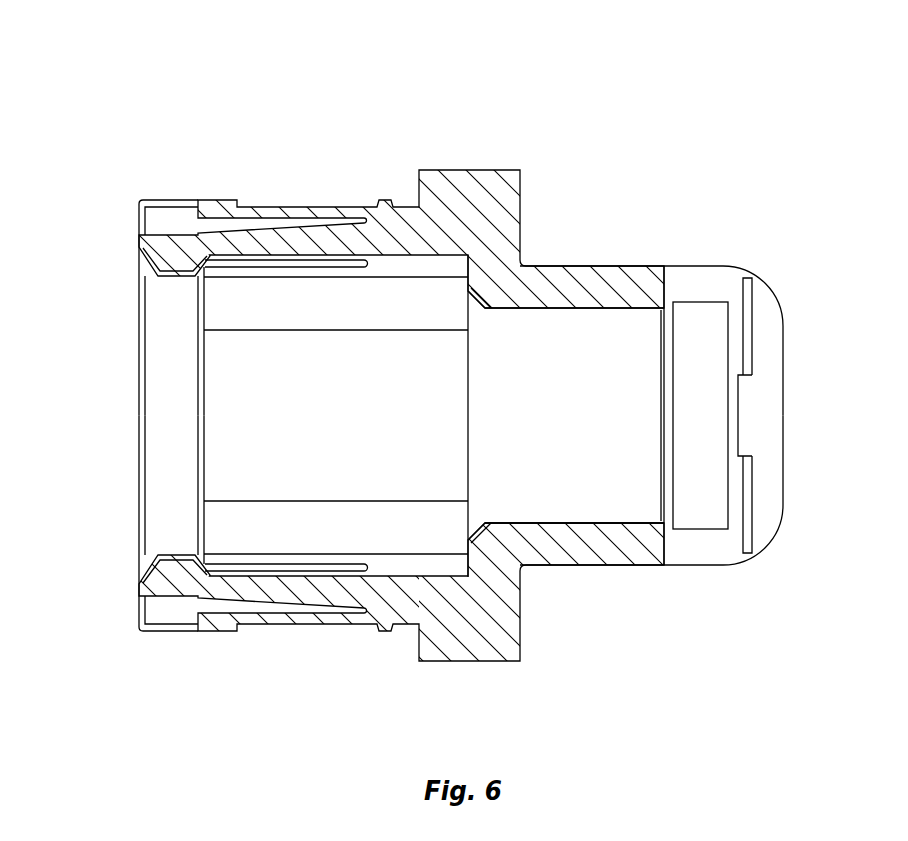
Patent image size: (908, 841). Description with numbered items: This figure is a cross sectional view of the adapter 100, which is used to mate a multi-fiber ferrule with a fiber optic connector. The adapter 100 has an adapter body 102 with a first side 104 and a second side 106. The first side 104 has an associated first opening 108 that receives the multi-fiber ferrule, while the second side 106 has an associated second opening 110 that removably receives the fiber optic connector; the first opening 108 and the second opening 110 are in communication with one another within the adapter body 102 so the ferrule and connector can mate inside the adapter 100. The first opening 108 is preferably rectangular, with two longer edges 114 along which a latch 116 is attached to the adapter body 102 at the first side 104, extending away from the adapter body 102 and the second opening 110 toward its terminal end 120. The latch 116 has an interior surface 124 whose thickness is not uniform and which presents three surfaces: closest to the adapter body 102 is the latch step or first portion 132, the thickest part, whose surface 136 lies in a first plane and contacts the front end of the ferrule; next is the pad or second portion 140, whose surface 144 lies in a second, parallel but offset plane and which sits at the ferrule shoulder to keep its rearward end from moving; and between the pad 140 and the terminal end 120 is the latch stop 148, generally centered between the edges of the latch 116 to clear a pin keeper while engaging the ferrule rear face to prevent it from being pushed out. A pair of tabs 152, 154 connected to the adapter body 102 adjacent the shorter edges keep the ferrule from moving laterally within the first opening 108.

The adapter 100 is at (642, 120).
The adapter body 102 is at (485, 170).
The first side 104 is at (768, 232).
The second side 106 is at (125, 643).
The first opening 108 is at (632, 410).
The second opening 110 is at (227, 404).
The longer edges 114 is at (470, 386).
The latch 116 is at (698, 566).
The terminal end 120 is at (787, 483).
The interior surface 124 is at (697, 275).
The latch step or first portion 132 is at (617, 510).
The surface of the latch step 136 is at (541, 454).
The pad or second portion 140 is at (733, 328).
The surface of the pad 144 is at (688, 387).
The latch stop 148 is at (743, 437).
The tab 152 is at (604, 266).
The tab 154 is at (560, 564).